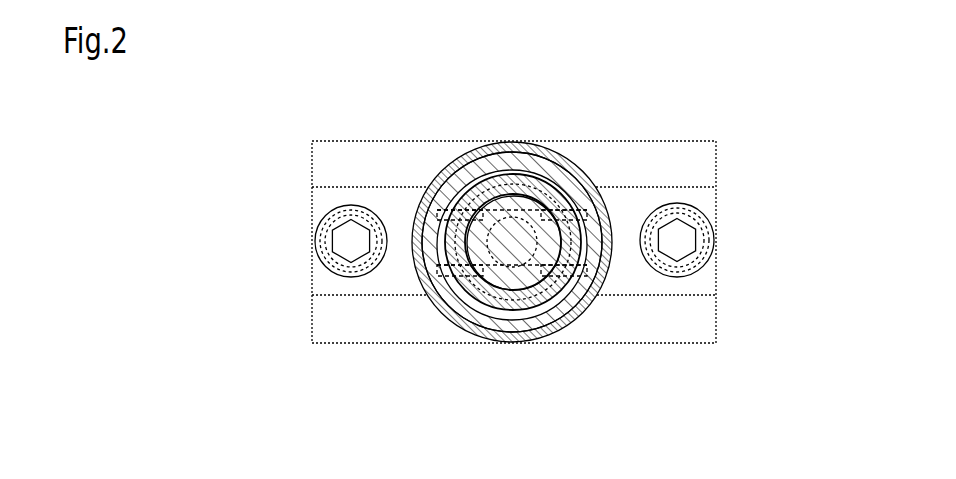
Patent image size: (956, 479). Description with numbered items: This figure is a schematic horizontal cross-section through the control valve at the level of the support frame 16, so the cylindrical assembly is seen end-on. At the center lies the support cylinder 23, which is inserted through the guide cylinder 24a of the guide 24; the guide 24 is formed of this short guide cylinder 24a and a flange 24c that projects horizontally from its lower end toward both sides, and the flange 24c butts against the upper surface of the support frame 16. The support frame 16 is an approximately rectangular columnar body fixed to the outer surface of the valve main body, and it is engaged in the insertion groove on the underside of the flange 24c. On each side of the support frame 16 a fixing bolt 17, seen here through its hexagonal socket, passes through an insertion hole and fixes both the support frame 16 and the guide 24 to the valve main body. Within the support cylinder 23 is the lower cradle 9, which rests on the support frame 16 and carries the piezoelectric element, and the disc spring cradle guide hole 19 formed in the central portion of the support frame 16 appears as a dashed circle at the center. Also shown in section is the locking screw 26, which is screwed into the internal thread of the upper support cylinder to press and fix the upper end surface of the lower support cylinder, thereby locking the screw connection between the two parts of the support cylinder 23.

The lower cradle 9 is at (537, 280).
The support frame 16 is at (665, 296).
The fixing bolt 17 is at (680, 240).
The disc spring cradle guide hole 19 is at (506, 248).
The support cylinder 23 is at (460, 169).
The guide 24 is at (627, 141).
The guide cylinder 24a is at (508, 152).
The flange 24c is at (683, 168).
The locking screw 26 is at (467, 277).